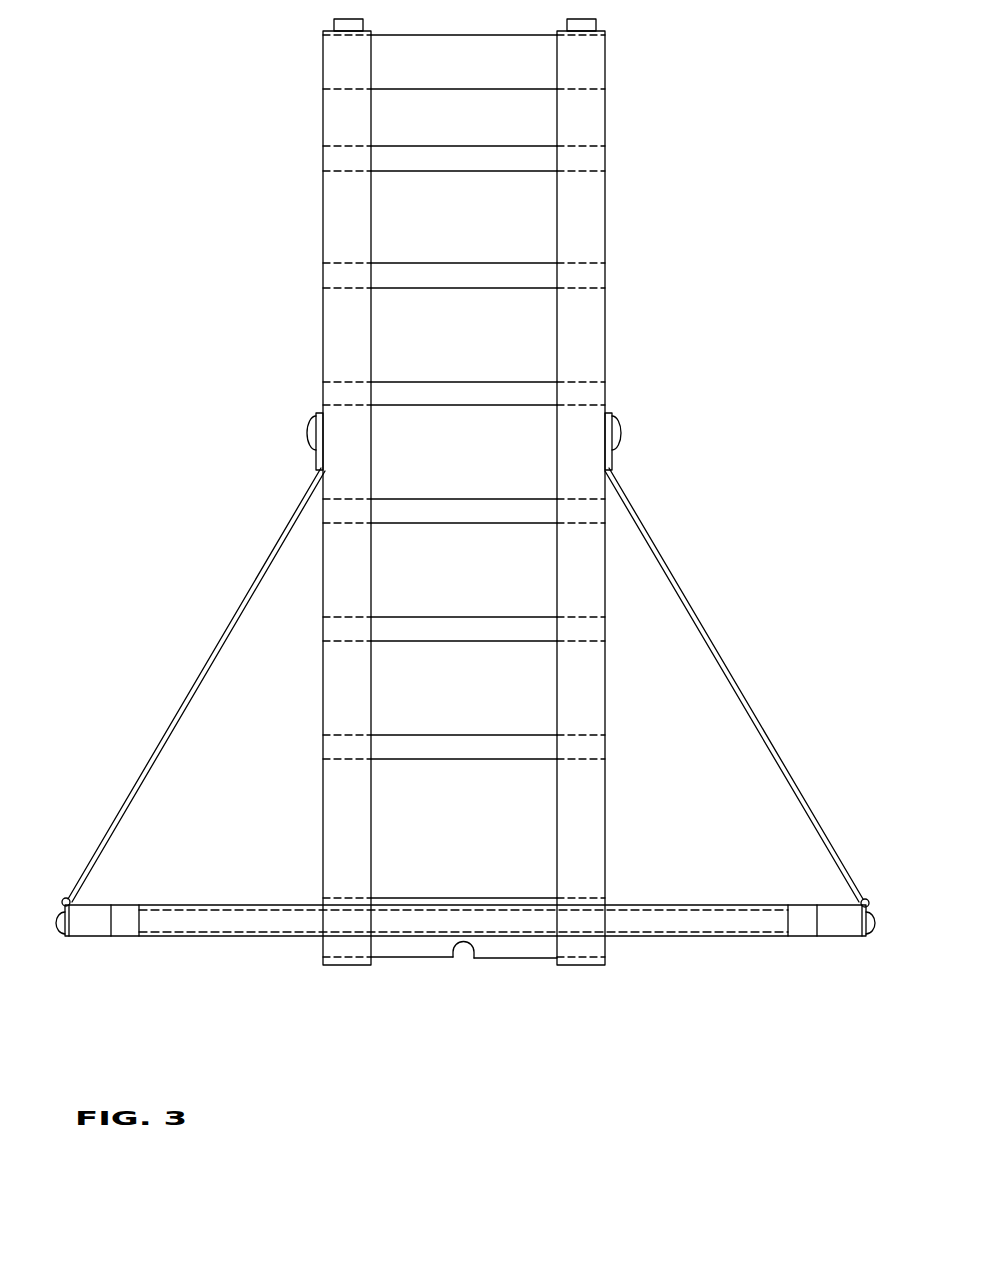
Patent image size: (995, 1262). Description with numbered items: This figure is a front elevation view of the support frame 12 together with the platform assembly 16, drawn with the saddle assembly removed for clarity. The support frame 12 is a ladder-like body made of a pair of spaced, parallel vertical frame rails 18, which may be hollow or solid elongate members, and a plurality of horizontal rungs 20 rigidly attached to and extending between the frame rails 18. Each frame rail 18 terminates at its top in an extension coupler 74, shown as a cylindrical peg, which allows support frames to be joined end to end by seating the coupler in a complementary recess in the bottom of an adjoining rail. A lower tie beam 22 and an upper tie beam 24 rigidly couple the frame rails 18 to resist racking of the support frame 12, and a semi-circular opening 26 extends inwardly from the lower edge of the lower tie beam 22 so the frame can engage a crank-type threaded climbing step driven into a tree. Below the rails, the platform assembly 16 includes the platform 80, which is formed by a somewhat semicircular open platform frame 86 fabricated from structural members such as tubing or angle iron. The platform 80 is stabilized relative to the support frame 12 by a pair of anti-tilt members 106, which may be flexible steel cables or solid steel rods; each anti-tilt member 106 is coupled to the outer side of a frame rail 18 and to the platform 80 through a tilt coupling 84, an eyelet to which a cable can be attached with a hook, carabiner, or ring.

The support frame 12 is at (292, 331).
The platform assembly 16 is at (260, 951).
The frame rail 18 is at (337, 126).
The rung 20 is at (420, 268).
The lower tie beam 22 is at (496, 948).
The upper tie beam 24 is at (502, 78).
The semi-circular opening 26 is at (470, 946).
The extension coupler 74 is at (337, 22).
The platform 80 is at (738, 905).
The tilt coupling 84 is at (63, 897).
The platform frame 86 is at (692, 938).
The anti-tilt member 106 is at (198, 675).